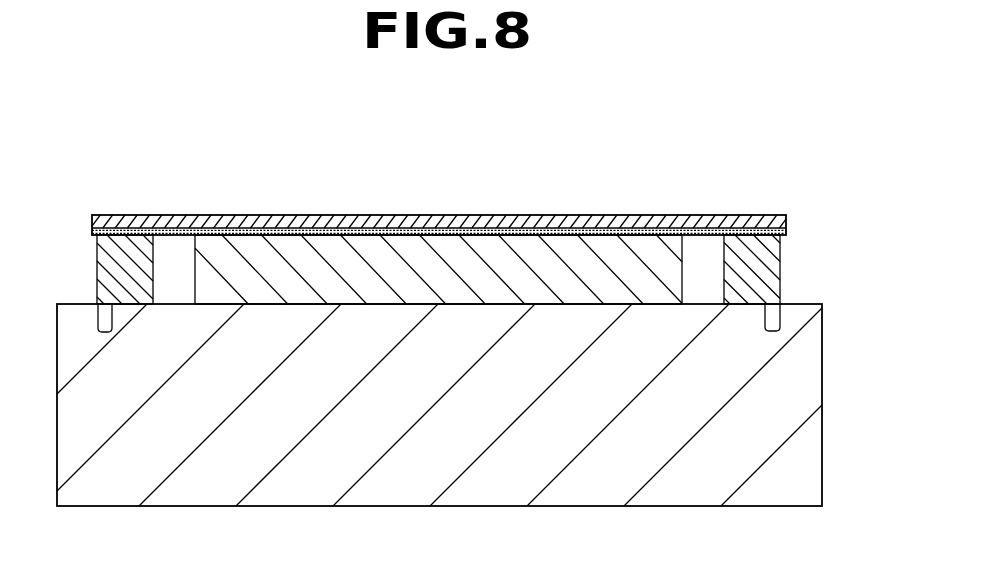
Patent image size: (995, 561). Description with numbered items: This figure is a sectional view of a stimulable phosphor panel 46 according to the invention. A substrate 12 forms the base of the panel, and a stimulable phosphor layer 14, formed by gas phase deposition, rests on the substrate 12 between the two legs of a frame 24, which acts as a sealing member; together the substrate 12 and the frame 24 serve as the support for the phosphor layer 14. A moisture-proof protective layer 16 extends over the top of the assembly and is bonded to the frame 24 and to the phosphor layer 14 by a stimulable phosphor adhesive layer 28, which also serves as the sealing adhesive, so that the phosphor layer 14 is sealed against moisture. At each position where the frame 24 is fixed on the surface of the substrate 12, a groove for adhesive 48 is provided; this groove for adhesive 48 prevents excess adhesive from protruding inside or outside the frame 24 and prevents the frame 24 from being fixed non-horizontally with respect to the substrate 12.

The substrate 12 is at (822, 410).
The stimulable phosphor layer 14 is at (513, 248).
The moisture-proof protective layer 16 is at (590, 218).
The frame 24 is at (107, 266).
The stimulable phosphor adhesive layer 28 is at (650, 215).
The phosphor panel 46 is at (693, 139).
The groove for adhesive 48 is at (100, 320).